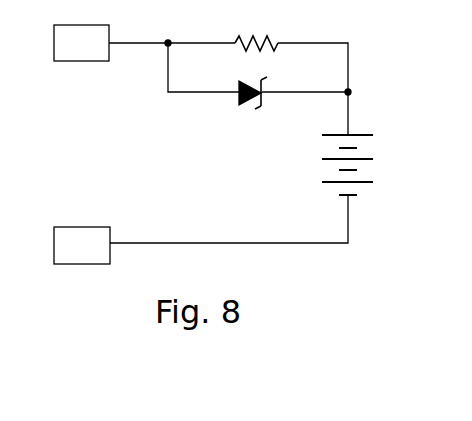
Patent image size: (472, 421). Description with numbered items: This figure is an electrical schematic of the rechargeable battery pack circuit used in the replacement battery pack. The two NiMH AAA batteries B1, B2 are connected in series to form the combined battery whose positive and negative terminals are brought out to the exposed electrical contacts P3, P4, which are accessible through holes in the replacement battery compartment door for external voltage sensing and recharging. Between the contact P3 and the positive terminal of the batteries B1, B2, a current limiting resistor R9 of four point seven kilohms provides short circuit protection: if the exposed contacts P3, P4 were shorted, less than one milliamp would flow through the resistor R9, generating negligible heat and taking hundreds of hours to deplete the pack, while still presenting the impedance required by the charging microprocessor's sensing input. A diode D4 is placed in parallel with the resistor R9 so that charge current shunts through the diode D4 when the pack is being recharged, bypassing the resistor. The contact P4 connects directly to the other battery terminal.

The electrical contact P3 is at (88, 30).
The electrical contact P4 is at (88, 234).
The current limiting resistor R9 is at (262, 36).
The diode D4 is at (270, 81).
The battery B1 is at (369, 139).
The battery B2 is at (369, 193).